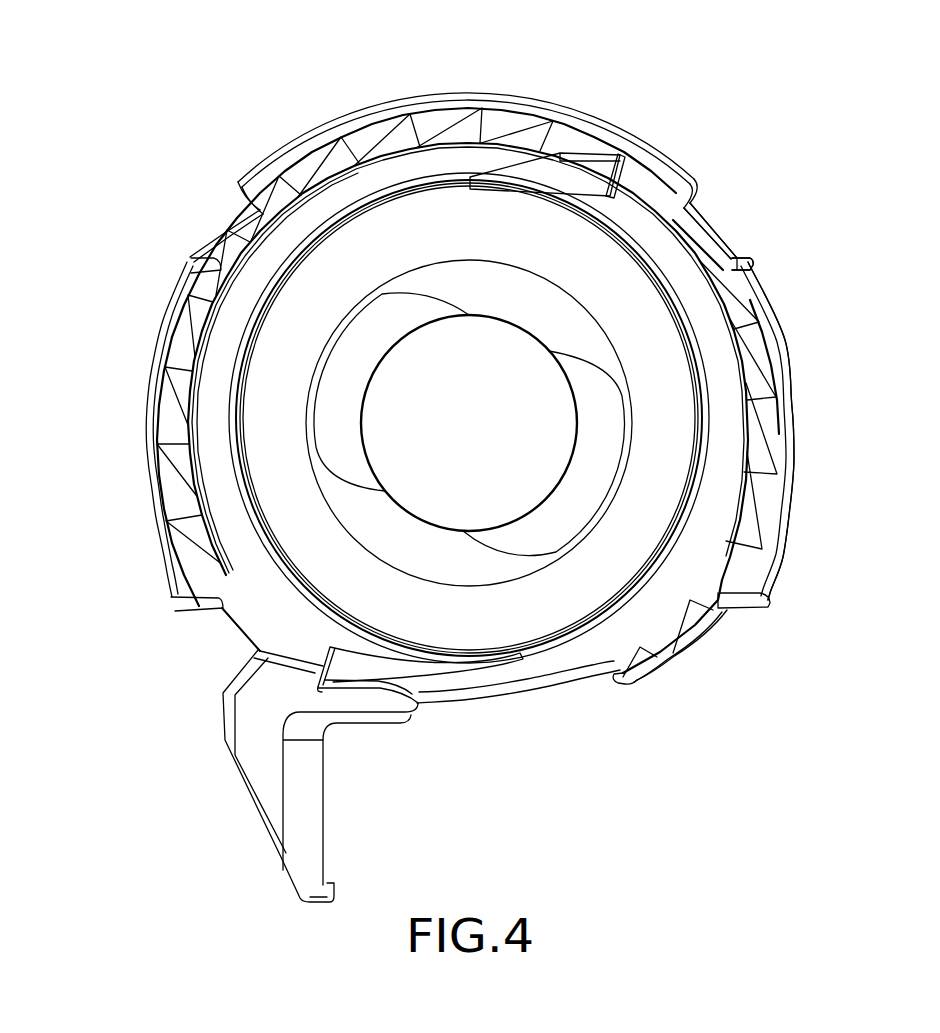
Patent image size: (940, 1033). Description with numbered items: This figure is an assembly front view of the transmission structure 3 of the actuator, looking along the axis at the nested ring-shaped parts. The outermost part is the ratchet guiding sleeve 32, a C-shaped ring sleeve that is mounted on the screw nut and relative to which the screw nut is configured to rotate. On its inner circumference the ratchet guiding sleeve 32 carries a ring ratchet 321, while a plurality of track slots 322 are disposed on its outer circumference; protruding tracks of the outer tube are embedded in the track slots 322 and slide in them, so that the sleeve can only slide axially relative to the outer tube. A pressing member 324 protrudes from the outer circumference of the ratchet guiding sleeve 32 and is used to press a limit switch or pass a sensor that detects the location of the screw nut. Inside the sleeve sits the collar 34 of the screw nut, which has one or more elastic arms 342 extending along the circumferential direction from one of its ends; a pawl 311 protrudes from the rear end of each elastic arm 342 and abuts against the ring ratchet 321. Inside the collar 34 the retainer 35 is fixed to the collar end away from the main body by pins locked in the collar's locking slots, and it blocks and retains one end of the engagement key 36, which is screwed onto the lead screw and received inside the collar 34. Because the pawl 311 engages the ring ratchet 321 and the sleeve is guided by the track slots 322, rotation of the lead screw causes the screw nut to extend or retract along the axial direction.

The transmission structure 3 is at (475, 53).
The ratchet guiding sleeve 32 is at (356, 108).
The collar 34 is at (332, 177).
The retainer 35 is at (663, 404).
The engagement key 36 is at (585, 342).
The elastic arm 342 is at (515, 163).
The pawl 311 is at (600, 165).
The track slot 322 is at (745, 258).
The ring ratchet 321 is at (705, 560).
The pressing member 324 is at (260, 787).